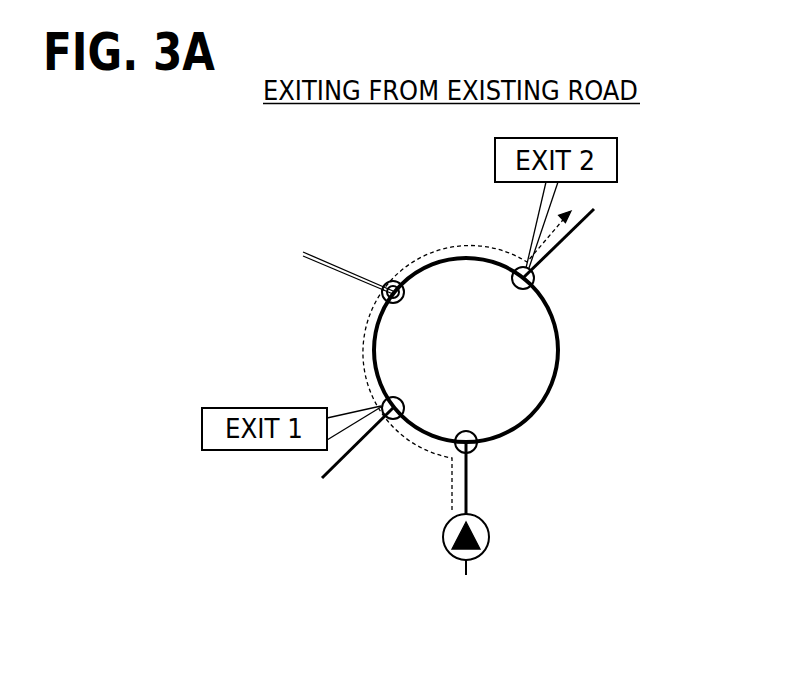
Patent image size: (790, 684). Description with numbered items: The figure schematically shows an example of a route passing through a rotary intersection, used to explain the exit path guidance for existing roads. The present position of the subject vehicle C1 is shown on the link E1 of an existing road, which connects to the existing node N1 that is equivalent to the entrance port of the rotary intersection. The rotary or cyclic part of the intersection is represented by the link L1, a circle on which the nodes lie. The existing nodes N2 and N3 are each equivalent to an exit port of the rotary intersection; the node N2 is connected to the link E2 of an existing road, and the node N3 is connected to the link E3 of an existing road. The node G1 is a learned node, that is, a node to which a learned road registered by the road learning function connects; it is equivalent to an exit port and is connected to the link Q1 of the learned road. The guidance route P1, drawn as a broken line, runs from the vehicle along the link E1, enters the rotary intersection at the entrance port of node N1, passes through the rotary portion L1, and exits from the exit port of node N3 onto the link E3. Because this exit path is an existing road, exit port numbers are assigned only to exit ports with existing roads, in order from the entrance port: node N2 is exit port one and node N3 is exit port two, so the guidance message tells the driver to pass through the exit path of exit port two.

The link of rotary part L1 is at (550, 392).
The guidance route P1 is at (357, 344).
The link of learned road Q1 is at (347, 270).
The learned node G1 is at (409, 302).
The existing node N1 is at (466, 428).
The existing node N2 is at (406, 396).
The existing node N3 is at (511, 292).
The link of existing road E1 is at (468, 475).
The link of existing road E2 is at (352, 448).
The link of existing road E3 is at (556, 248).
The present position of subject vehicle C1 is at (443, 537).